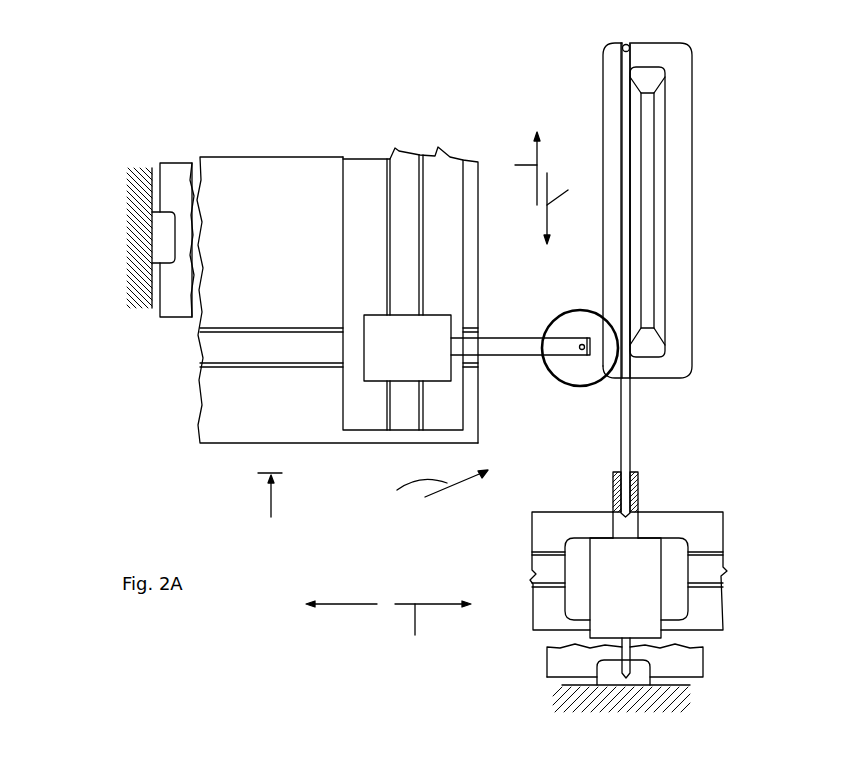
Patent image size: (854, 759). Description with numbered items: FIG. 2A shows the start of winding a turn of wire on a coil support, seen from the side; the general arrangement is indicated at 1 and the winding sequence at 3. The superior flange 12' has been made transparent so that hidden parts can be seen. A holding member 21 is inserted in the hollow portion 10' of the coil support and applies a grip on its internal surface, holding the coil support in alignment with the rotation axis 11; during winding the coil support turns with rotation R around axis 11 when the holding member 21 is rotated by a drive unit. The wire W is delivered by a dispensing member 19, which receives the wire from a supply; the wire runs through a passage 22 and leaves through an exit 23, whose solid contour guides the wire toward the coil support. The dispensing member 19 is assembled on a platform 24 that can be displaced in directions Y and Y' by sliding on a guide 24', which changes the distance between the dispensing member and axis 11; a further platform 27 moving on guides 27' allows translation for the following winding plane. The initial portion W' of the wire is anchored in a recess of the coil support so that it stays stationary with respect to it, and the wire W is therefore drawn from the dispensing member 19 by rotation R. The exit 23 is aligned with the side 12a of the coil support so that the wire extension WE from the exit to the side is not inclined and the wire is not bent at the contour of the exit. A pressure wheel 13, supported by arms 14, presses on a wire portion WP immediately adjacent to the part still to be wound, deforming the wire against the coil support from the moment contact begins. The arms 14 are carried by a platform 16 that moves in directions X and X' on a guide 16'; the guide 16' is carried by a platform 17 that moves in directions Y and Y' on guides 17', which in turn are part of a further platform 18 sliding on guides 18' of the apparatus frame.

The first axis direction 1 is at (270, 500).
The rotation direction 3 is at (435, 488).
The hollow portion 10' is at (676, 210).
The rotation axis 11 is at (648, 213).
The side 12a is at (623, 125).
The superior flange 12' is at (690, 212).
The pressure wheel 13 is at (568, 323).
The arms 14 is at (512, 348).
The platform 16 is at (402, 321).
The guide 16' is at (411, 259).
The platform 17 is at (407, 274).
The guides 17' is at (339, 322).
The further platform 18 is at (337, 269).
The guides 18' is at (123, 240).
The dispensing member 19 is at (638, 489).
The holding member 21 is at (650, 117).
The passage 22 is at (613, 481).
The exit 23 is at (634, 472).
The platform 24 is at (594, 571).
The guide 24' is at (561, 588).
The platform 27 is at (552, 658).
The guides 27' is at (658, 678).
The wire W is at (554, 669).
The initial portion of wire W' is at (591, 42).
The wire extension WE is at (620, 432).
The wire portion WP is at (630, 352).
The rotation R is at (737, 357).
The direction X is at (518, 168).
The direction X' is at (565, 208).
The direction Y is at (341, 625).
The direction Y' is at (433, 629).